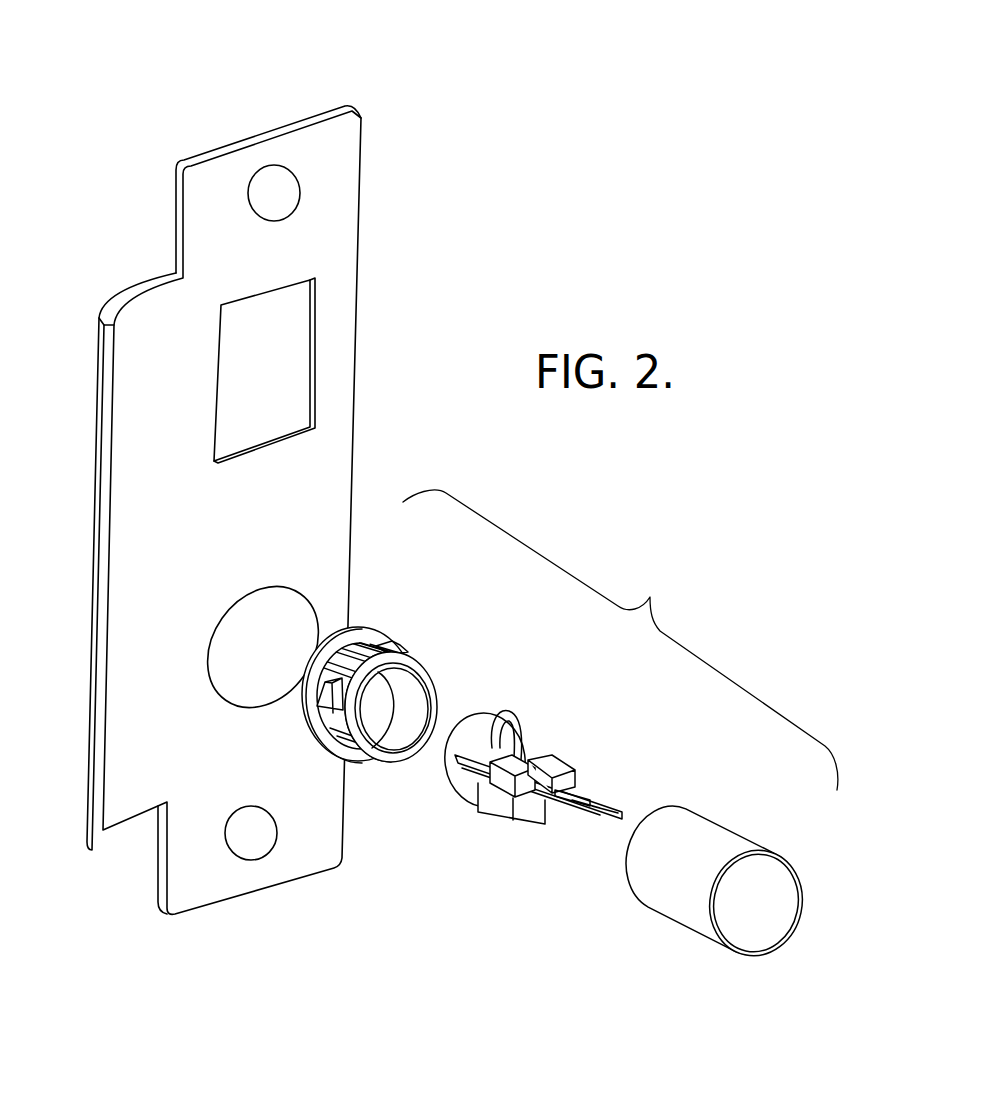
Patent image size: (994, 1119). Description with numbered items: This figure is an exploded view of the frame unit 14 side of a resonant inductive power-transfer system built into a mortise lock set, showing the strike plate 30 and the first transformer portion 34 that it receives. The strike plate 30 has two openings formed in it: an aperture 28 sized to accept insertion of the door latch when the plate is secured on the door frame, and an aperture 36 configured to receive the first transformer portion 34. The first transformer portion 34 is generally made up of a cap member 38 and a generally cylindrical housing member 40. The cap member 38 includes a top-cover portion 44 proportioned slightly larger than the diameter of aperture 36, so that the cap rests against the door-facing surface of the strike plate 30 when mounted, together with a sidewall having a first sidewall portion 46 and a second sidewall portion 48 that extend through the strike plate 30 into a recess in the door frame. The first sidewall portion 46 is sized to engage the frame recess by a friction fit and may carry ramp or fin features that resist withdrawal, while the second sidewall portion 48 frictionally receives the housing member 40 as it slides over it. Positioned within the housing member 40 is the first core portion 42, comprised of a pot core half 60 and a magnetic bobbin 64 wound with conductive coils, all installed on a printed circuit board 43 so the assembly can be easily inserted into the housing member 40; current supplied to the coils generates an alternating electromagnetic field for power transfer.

The frame unit 14 is at (590, 67).
The strike plate 30 is at (178, 337).
The aperture 28 is at (290, 345).
The aperture 36 is at (240, 618).
The top-cover portion 44 is at (403, 696).
The first sidewall portion 46 is at (393, 648).
The cap member 38 is at (438, 682).
The second sidewall portion 48 is at (355, 727).
The first transformer portion 34 is at (645, 573).
The first core portion 42 is at (511, 787).
The magnetic bobbin 64 is at (466, 787).
The pot core half 60 is at (467, 800).
The printed circuit board 43 is at (560, 810).
The housing member 40 is at (710, 817).